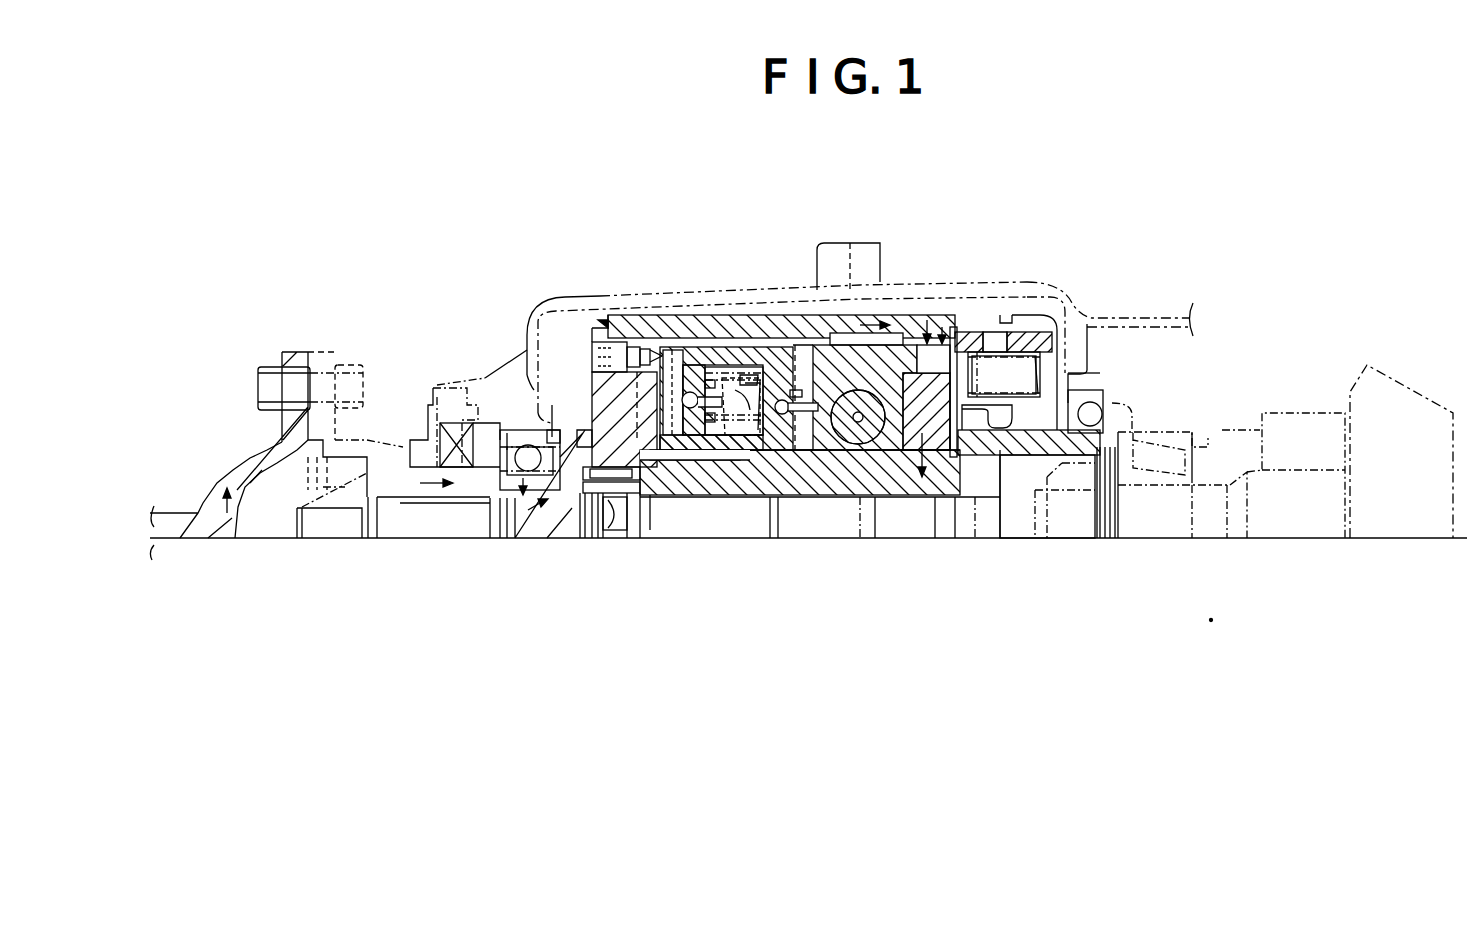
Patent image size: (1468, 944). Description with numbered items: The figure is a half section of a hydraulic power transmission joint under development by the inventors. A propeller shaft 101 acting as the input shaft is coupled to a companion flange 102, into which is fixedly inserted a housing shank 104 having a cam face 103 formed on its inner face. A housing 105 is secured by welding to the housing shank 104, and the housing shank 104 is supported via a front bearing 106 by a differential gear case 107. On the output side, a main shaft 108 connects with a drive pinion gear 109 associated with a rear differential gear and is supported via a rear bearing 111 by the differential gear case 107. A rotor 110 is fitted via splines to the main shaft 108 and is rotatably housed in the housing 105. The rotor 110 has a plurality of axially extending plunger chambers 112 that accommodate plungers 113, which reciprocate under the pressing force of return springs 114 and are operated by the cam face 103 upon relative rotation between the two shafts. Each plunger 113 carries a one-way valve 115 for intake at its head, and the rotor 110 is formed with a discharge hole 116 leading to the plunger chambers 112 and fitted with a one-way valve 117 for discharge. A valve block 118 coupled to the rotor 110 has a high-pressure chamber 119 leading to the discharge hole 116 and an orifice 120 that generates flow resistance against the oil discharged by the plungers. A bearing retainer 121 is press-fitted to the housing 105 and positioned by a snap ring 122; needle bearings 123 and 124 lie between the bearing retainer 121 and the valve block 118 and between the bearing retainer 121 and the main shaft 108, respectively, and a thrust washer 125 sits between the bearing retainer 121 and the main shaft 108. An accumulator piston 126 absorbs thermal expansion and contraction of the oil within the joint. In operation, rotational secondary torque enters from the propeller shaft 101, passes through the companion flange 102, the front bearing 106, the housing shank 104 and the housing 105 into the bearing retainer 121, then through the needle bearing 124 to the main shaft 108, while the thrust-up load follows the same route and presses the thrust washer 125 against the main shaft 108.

The propeller shaft 101 is at (233, 473).
The companion flange 102 is at (390, 453).
The cam face 103 is at (630, 500).
The housing shank 104 is at (538, 523).
The housing 105 is at (638, 345).
The front bearing 106 is at (507, 415).
The differential gear case 107 is at (527, 330).
The main shaft 108 is at (1085, 330).
The drive pinion gear 109 is at (1278, 483).
The rotor 110 is at (690, 350).
The rear bearing 111 is at (1110, 394).
The plunger chambers 112 is at (720, 372).
The plungers 113 is at (705, 440).
The return springs 114 is at (745, 432).
The one-way valve for intake 115 is at (685, 412).
The discharge hole 116 is at (805, 470).
The one-way valve for discharge 117 is at (758, 425).
The valve block 118 is at (840, 357).
The high-pressure chamber 119 is at (812, 415).
The orifice 120 is at (860, 425).
The bearing retainer 121 is at (978, 350).
The snap ring 122 is at (955, 333).
The needle bearing 123 is at (915, 442).
The needle bearing 124 is at (960, 470).
The thrust washer 125 is at (1008, 470).
The accumulator piston 126 is at (980, 407).